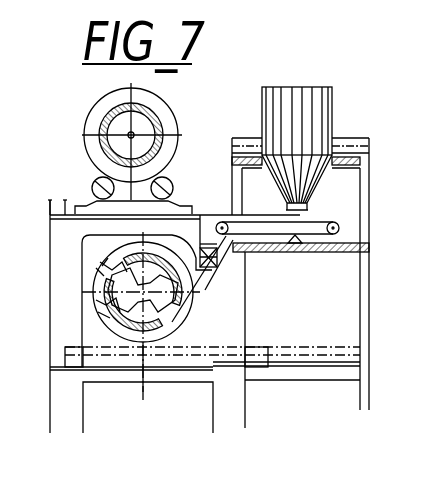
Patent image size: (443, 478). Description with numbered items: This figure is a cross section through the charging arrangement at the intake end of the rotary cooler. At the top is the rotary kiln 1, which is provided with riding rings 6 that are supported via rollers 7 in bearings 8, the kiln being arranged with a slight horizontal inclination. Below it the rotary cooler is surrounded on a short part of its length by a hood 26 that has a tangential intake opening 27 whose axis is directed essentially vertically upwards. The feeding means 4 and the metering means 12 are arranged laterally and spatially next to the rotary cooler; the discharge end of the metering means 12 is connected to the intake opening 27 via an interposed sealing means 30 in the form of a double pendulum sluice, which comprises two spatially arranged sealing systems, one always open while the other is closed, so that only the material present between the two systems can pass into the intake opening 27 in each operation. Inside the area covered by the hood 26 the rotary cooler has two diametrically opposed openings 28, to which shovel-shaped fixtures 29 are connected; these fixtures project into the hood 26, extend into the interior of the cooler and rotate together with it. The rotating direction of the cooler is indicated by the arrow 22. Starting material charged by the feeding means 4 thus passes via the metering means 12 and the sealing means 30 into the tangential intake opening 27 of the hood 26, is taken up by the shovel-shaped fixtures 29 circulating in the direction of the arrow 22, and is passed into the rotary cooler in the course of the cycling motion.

The rotary kiln 1 is at (104, 127).
The riding rings 6 is at (171, 117).
The rollers 7 is at (170, 184).
The bearings 8 is at (180, 204).
The feeding means 4 is at (333, 124).
The metering means 12 is at (314, 222).
The arrow indicating rotating direction of the rotary cooler 22 is at (104, 322).
The hood 26 is at (137, 345).
The tangential intake opening 27 is at (206, 296).
The openings 28 is at (100, 302).
The shovel-shaped fixtures 29 is at (100, 270).
The sealing means 30 is at (218, 262).